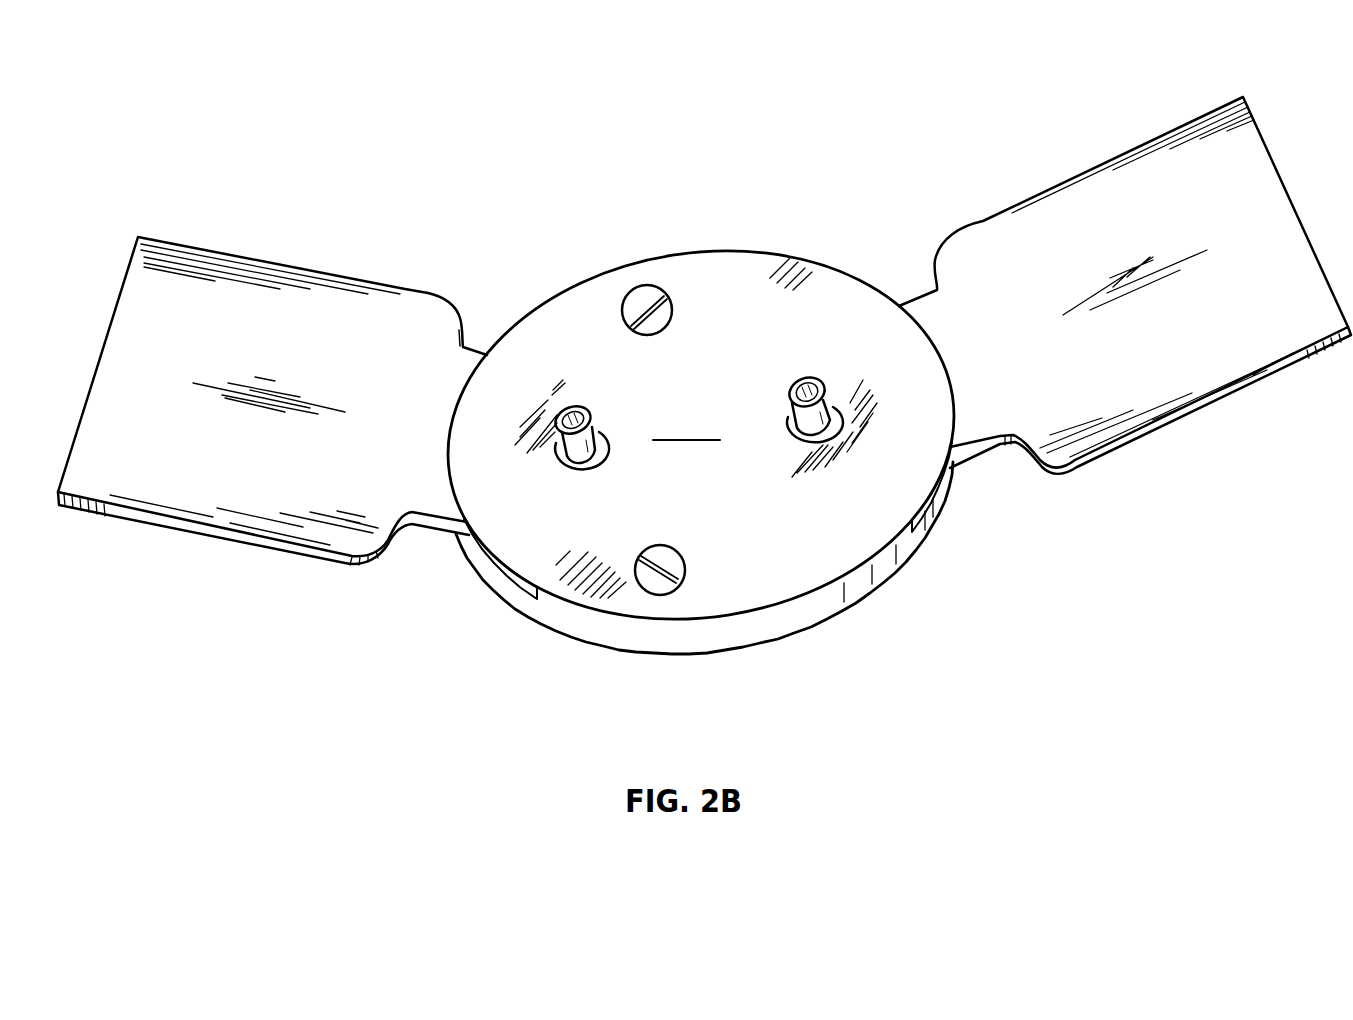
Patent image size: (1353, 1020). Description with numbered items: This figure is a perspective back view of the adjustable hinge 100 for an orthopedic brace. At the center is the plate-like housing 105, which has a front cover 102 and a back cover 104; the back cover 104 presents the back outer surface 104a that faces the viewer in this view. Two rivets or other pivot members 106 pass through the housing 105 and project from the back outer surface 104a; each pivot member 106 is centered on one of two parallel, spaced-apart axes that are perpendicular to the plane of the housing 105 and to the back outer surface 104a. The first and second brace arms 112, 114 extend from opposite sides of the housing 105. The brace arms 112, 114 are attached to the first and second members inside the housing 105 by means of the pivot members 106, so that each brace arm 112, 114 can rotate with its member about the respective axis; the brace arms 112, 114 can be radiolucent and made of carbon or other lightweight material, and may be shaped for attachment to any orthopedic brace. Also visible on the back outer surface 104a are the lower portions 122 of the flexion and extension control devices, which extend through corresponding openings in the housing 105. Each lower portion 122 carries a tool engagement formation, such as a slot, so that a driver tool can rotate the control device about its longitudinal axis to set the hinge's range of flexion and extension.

The adjustable hinge 100 is at (256, 130).
The front cover 102 is at (758, 625).
The back cover 104 is at (803, 557).
The back outer surface 104a is at (686, 426).
The housing 105 is at (716, 680).
The pivot members 106 is at (572, 405).
The first brace arm 112 is at (408, 308).
The second brace arm 114 is at (985, 235).
The lower portion 122 is at (640, 298).